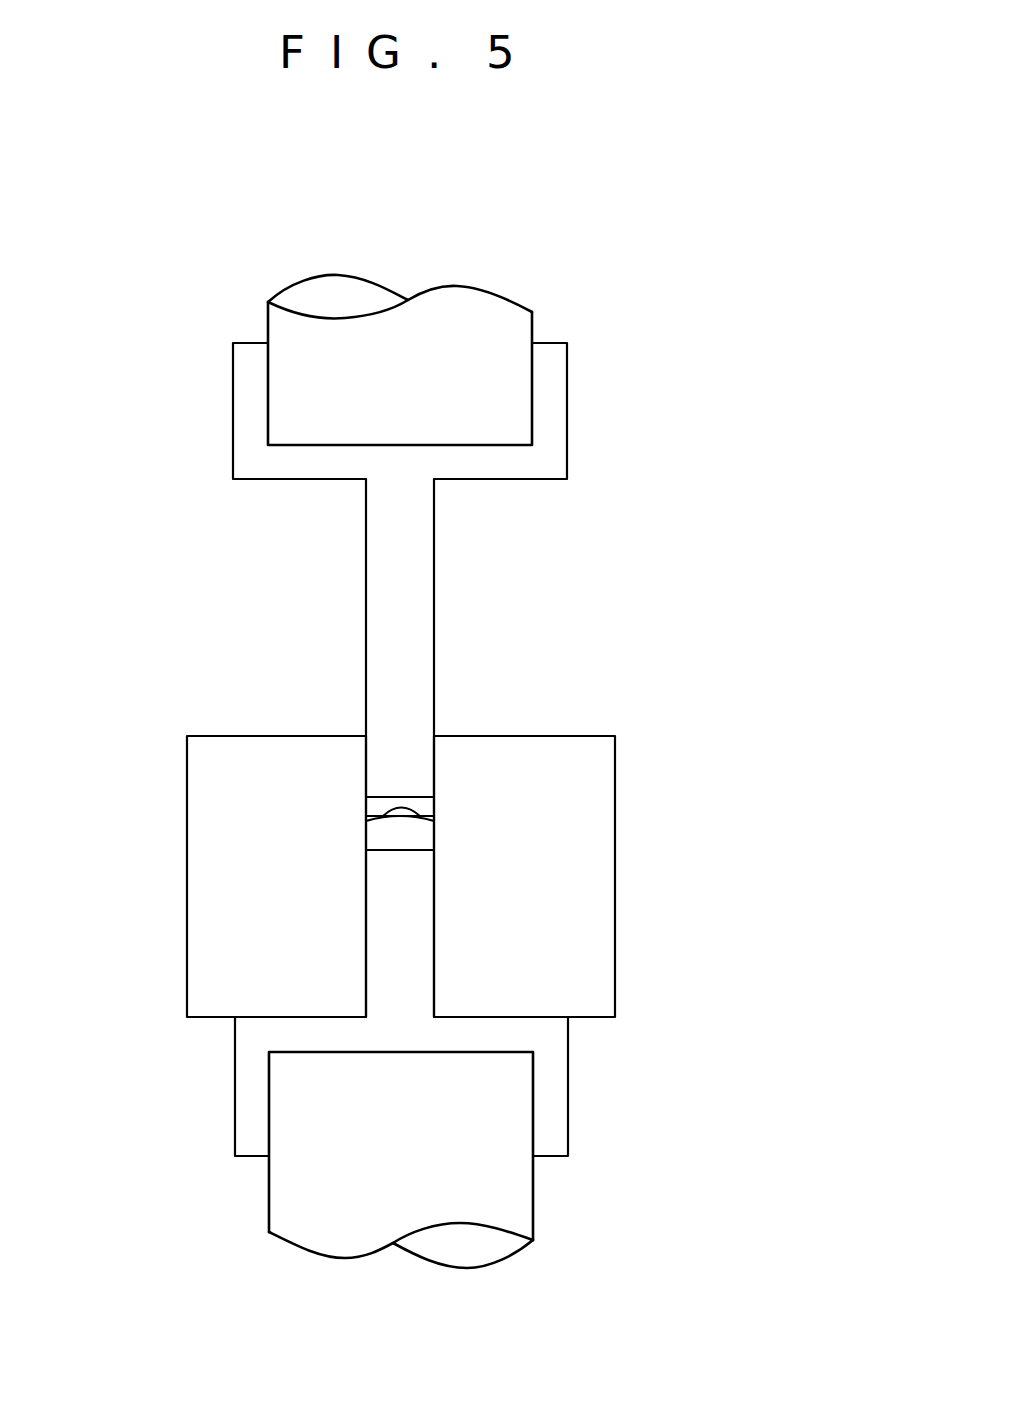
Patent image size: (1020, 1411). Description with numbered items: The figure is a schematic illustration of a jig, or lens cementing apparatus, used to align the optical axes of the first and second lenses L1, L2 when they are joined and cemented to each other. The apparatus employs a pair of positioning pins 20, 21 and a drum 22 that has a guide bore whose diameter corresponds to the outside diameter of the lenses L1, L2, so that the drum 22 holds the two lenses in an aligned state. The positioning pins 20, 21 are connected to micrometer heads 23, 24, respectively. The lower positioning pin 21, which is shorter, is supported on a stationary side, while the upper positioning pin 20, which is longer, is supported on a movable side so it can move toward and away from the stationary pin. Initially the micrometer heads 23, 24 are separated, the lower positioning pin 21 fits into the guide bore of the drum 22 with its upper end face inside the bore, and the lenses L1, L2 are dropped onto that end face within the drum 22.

The positioning pin 20 is at (382, 602).
The positioning pin 21 is at (384, 927).
The drum 22 is at (560, 938).
The micrometer head 23 is at (482, 332).
The micrometer head 24 is at (302, 1188).
The first lens L1 is at (427, 806).
The second lens L2 is at (426, 836).